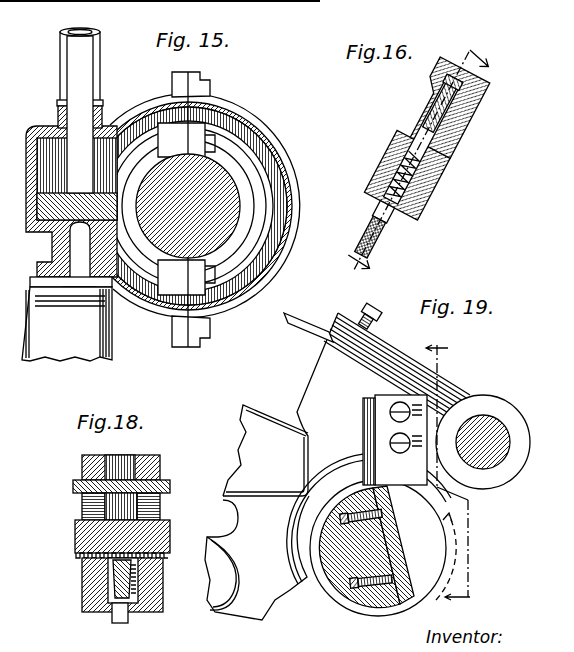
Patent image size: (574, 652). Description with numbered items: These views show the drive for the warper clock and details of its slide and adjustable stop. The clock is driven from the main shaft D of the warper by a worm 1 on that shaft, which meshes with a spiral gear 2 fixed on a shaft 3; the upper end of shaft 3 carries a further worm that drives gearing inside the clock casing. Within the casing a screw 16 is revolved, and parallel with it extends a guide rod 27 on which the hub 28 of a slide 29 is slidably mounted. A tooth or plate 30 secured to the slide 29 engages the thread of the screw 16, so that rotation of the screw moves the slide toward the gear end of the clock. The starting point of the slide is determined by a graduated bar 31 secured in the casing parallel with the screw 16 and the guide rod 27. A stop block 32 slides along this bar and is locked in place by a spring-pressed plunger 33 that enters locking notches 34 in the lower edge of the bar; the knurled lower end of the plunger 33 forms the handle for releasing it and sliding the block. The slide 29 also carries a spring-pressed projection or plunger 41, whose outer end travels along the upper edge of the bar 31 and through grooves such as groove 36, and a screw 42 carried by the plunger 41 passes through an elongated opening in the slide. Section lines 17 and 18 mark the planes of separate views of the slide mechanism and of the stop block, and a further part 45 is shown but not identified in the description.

In FIG. 15, the worm 1 is at (237, 157).
In FIG. 15, the spiral gear 2 is at (50, 200).
In FIG. 15, the shaft 3 is at (66, 57).
In FIG. 15, the main shaft D is at (215, 185).
In FIG. 19, the screw 16 is at (350, 603).
In FIG. 19, the line 17— 17 is at (458, 473).
In FIG. 16, the line 18— 18 is at (417, 160).
In FIG. 19, the guide rod 27 is at (488, 458).
In FIG. 19, the hub 28 is at (487, 404).
In FIG. 19, the slide 29 is at (245, 433).
In FIG. 19, the tooth or plate 30 is at (383, 470).
In FIG. 16, the graduated bar 31 is at (430, 123).
In FIG. 18, the graduated bar 31 is at (72, 487).
In FIG. 16, the stop block 32 is at (475, 105).
In FIG. 18, the stop block 32 is at (93, 461).
In FIG. 16, the spring-pressed plunger 33 is at (417, 175).
In FIG. 18, the spring-pressed plunger 33 is at (128, 568).
In FIG. 18, the locking notches 34 is at (166, 556).
In FIG. 16, the groove 36 is at (447, 122).
In FIG. 19, the spring-pressed projection or plunger 41 is at (300, 327).
In FIG. 19, the screw 42 is at (378, 322).
In FIG. 19, the key 45 is at (418, 572).